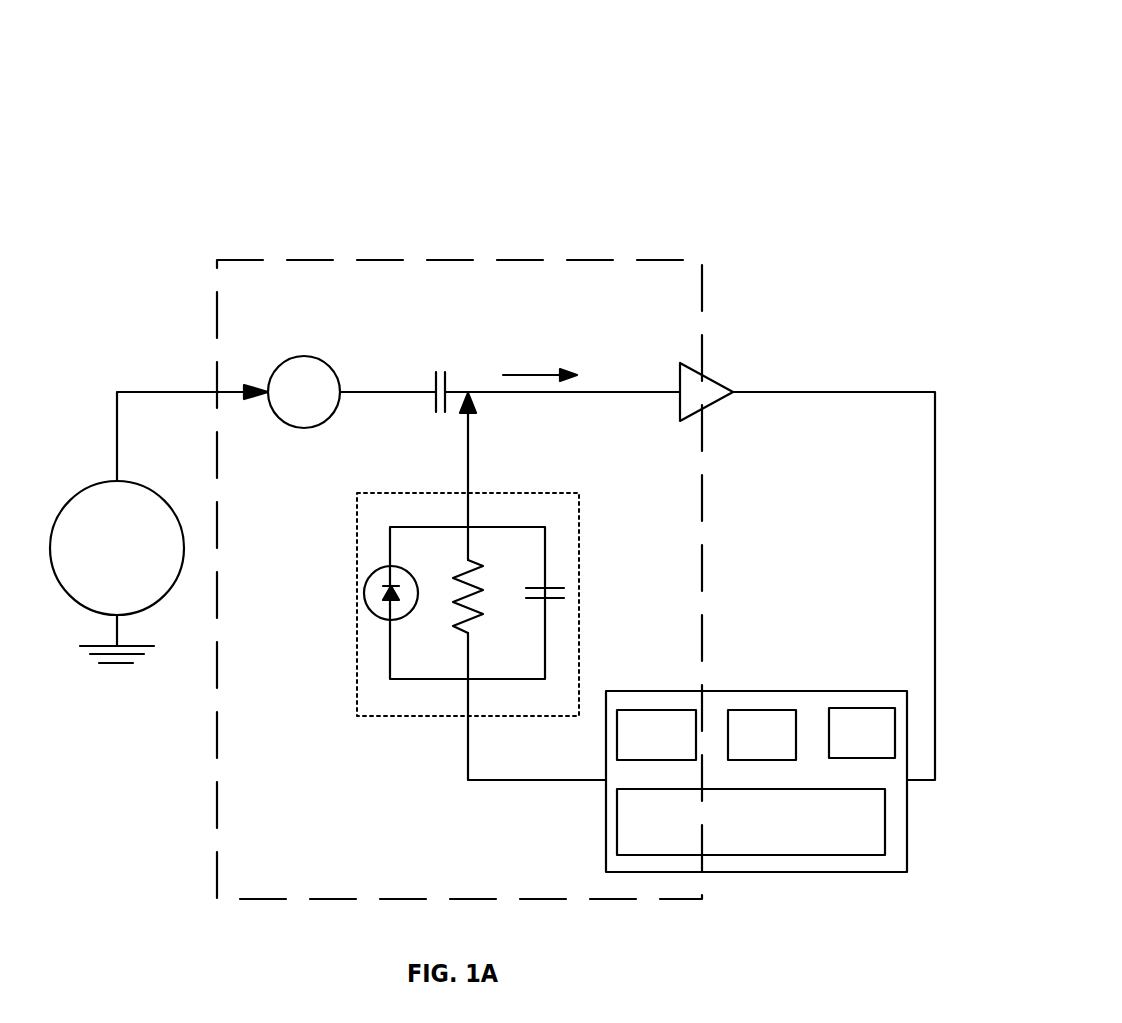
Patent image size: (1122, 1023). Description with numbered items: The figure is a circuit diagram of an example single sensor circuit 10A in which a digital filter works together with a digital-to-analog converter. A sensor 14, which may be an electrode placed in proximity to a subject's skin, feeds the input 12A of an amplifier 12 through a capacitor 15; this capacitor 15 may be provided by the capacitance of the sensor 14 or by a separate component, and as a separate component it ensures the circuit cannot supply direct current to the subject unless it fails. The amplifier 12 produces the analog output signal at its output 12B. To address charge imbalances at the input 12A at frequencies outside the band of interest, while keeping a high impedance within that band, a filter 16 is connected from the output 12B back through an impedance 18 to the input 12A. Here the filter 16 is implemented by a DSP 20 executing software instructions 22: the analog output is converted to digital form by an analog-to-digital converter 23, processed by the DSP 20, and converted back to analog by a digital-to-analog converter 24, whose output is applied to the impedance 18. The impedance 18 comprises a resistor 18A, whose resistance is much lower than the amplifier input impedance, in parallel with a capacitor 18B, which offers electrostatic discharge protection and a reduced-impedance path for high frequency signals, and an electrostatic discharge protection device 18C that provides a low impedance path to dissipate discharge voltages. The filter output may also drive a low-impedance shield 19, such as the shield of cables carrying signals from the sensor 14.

The circuit 10A is at (818, 72).
The amplifier 12 is at (710, 412).
The input 12A is at (650, 392).
The output 12B is at (770, 392).
The sensor 14 is at (304, 392).
The capacitor 15 is at (440, 370).
The filter 16 is at (680, 691).
The impedance 18 is at (385, 716).
The resistor 18A is at (453, 627).
The capacitor 18B is at (568, 594).
The electrostatic discharge protection device 18C is at (374, 560).
The shield 19 is at (497, 260).
The digital signal processor 20 is at (757, 710).
The software instructions 22 is at (747, 855).
The analog-to-digital converter 23 is at (852, 708).
The digital-to-analog converter 24 is at (618, 760).